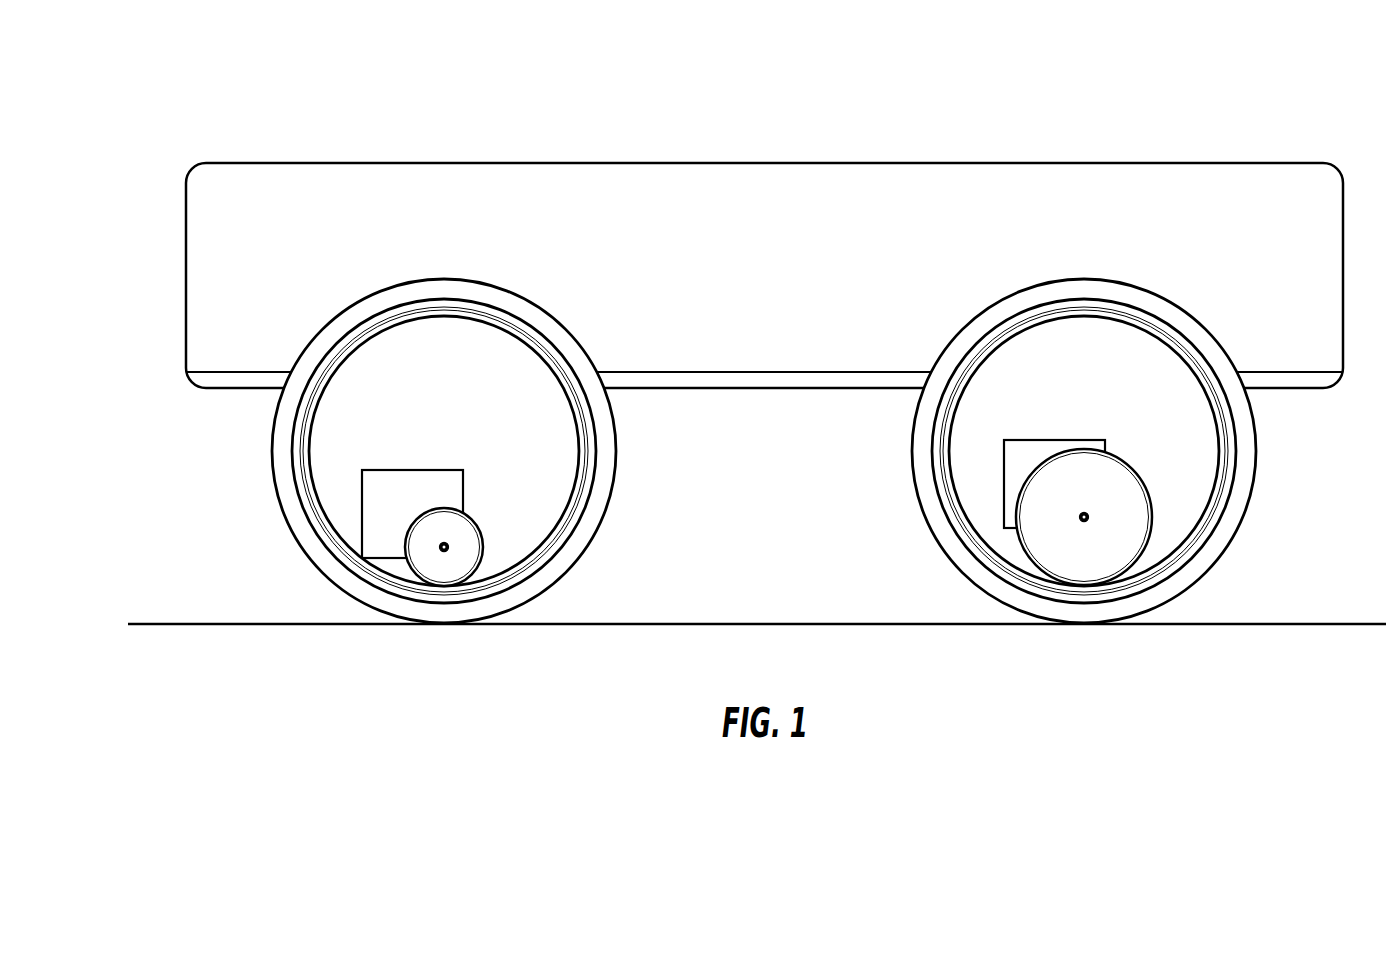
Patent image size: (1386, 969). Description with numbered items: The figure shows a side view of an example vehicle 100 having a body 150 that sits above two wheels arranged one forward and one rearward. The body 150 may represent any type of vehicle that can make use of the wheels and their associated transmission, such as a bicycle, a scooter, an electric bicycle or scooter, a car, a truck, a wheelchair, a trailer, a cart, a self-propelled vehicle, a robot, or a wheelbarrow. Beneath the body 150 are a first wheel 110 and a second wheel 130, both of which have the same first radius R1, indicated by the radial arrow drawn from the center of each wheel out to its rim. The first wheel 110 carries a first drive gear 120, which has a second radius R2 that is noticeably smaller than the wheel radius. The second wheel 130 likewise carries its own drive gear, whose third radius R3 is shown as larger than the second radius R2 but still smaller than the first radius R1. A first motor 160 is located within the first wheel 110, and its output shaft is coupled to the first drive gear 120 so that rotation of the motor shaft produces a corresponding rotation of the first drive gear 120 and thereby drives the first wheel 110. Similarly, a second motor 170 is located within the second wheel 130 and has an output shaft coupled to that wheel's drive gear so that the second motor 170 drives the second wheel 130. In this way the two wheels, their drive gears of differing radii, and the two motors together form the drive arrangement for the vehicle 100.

The vehicle 100 is at (757, 335).
The first wheel 110 is at (302, 556).
The first drive gear 120 is at (407, 578).
The second wheel 130 is at (942, 556).
The body 150 is at (280, 152).
The first motor 160 is at (352, 495).
The second motor 170 is at (994, 495).
The first radius R1 is at (444, 281).
The second radius R2 is at (444, 553).
The third radius R3 is at (1084, 523).